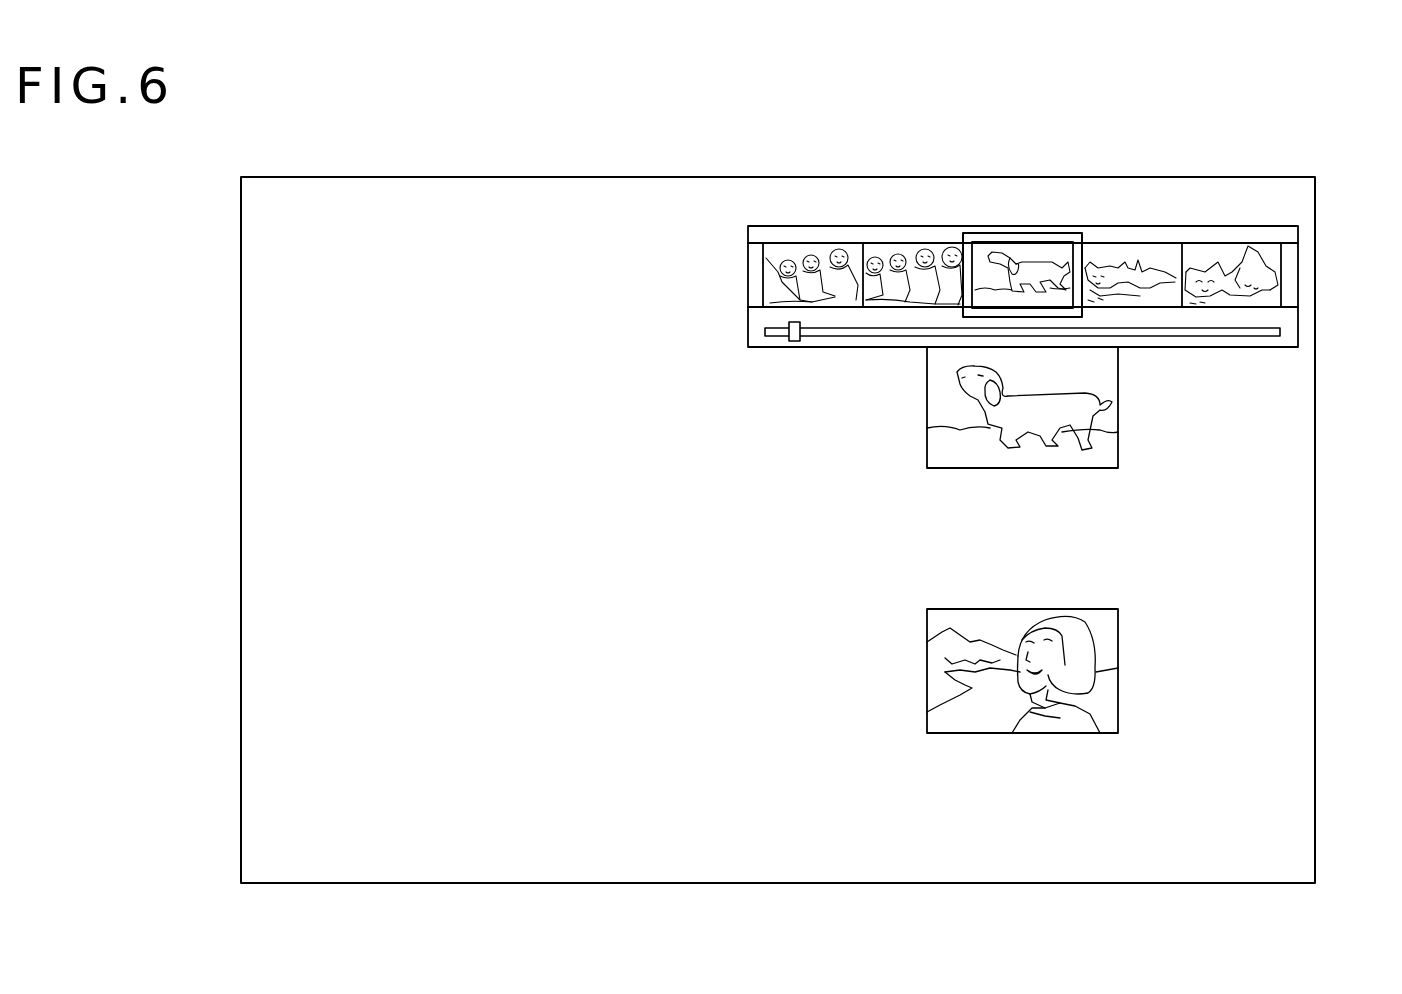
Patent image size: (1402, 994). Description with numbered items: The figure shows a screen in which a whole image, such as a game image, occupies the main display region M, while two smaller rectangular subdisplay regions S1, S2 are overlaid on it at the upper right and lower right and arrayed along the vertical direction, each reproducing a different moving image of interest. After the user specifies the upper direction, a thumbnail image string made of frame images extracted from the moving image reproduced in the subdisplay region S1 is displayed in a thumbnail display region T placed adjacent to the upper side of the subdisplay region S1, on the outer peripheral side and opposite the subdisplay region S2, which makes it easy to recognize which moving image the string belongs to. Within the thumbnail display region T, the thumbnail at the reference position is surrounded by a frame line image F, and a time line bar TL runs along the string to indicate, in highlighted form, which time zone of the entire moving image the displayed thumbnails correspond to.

The main display region M is at (1316, 541).
The thumbnail display region T is at (1298, 262).
The frame line image F is at (1054, 233).
The time line bar TL is at (1280, 331).
The subdisplay region S1 is at (1118, 433).
The subdisplay region S2 is at (1118, 642).